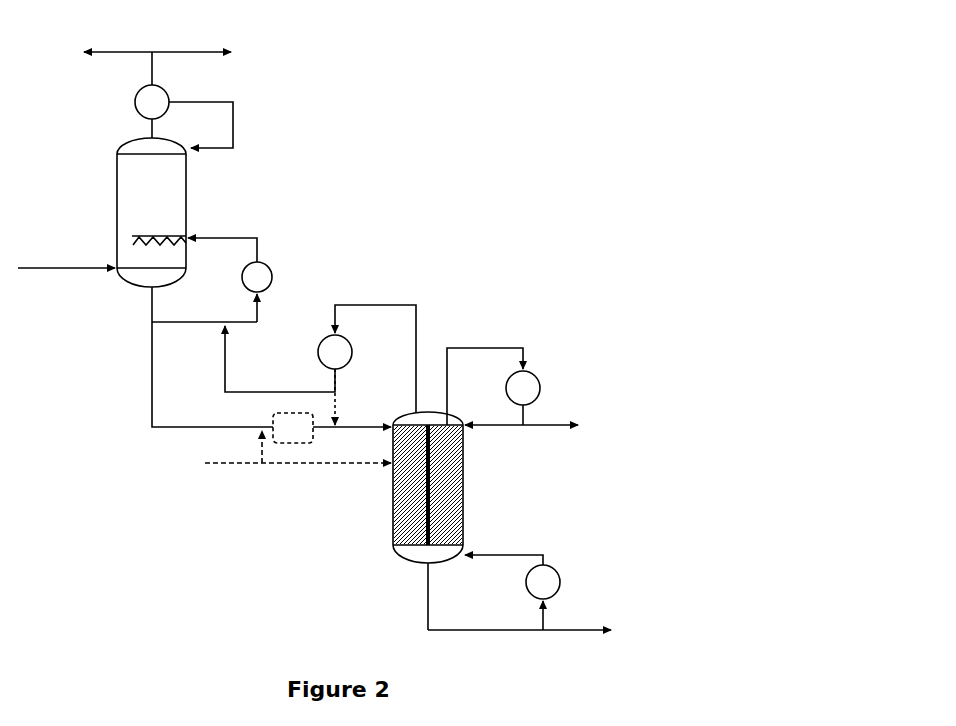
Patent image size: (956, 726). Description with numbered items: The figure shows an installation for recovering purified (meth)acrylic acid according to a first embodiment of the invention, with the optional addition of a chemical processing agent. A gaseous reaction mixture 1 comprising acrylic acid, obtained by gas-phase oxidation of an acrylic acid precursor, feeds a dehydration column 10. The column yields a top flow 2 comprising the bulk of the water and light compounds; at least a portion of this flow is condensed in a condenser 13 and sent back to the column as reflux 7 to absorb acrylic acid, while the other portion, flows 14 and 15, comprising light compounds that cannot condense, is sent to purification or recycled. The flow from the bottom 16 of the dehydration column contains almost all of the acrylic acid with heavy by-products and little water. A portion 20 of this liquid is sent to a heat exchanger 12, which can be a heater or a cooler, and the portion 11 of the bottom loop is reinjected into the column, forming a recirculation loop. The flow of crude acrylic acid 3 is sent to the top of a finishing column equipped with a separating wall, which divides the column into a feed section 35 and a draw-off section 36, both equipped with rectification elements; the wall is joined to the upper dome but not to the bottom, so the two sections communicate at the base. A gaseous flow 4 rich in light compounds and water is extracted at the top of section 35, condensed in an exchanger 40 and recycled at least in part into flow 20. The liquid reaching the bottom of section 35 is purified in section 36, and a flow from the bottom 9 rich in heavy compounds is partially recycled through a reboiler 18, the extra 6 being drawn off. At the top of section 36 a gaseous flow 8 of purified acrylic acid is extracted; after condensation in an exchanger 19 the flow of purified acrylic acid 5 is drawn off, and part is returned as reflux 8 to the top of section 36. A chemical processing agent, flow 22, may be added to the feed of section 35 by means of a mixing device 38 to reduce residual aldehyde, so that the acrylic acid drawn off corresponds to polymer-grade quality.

The gaseous reaction mixture 1 is at (66, 253).
The top flow 2 is at (142, 128).
The flow of crude acrylic acid 3 is at (198, 374).
The gaseous flow rich in light compounds 4 is at (375, 346).
The flow of purified acrylic acid 5 is at (533, 426).
The drawn off flow 6 is at (529, 631).
The reflux 7 is at (214, 125).
The flow from the top 8 is at (485, 386).
The flow from the bottom 9 is at (416, 596).
The dehydration column 10 is at (151, 212).
The portion of the bottom loop 11 is at (236, 250).
The heat exchanger 12 is at (257, 292).
The condenser 13 is at (152, 85).
The flow of light compounds 14 is at (118, 38).
The flow of light compounds 15 is at (191, 38).
The flow from the bottom 16 is at (131, 309).
The reboiler 18 is at (512, 592).
The exchanger 19 is at (523, 398).
The portion of the liquid flow 20 is at (204, 308).
The flow of chemical processing agent 22 is at (284, 452).
The feed section 35 is at (428, 478).
The draw-off section 36 is at (428, 494).
The mixing device 38 is at (332, 428).
The exchanger 40 is at (288, 375).